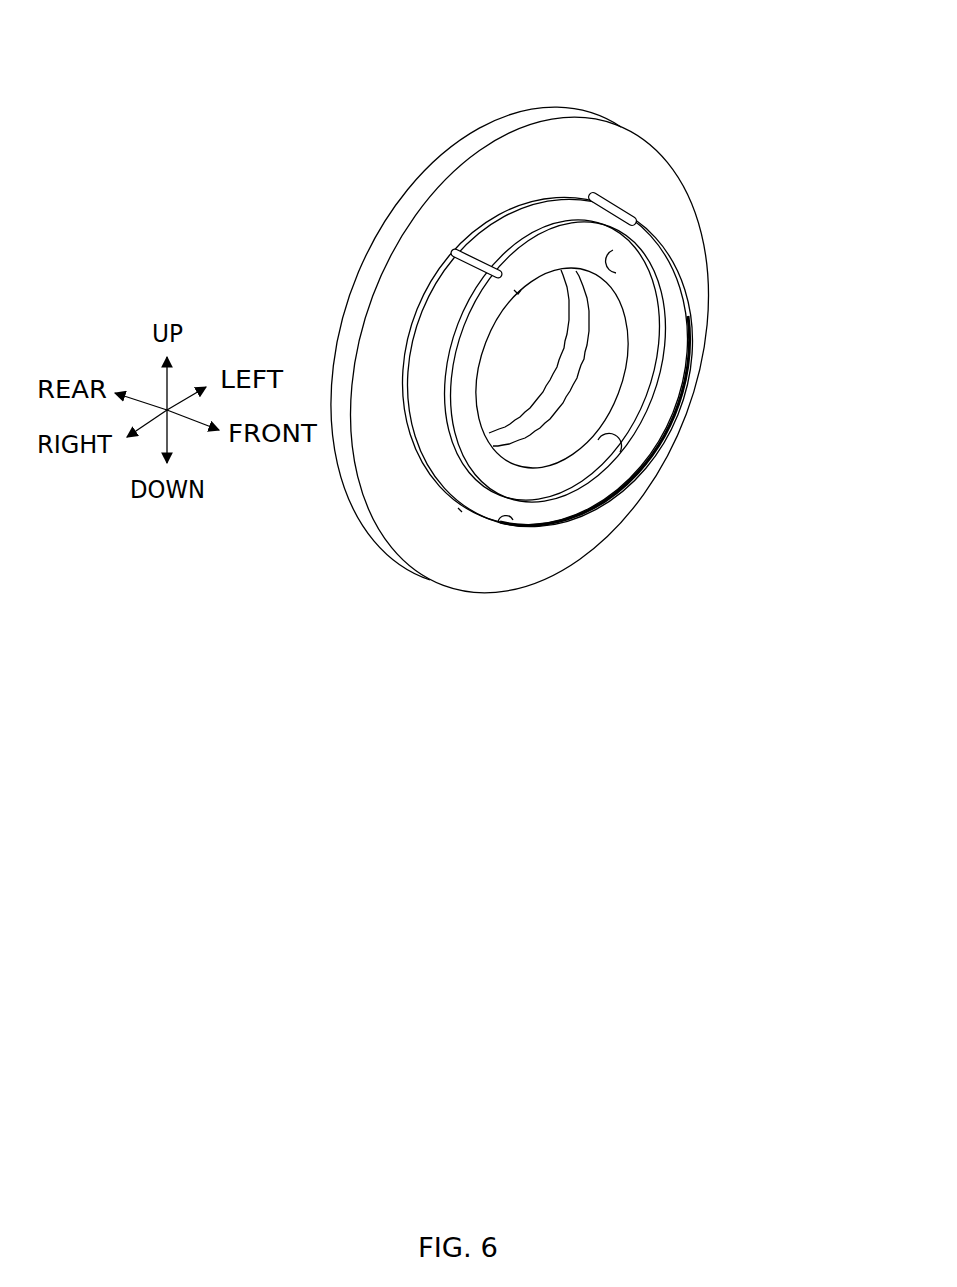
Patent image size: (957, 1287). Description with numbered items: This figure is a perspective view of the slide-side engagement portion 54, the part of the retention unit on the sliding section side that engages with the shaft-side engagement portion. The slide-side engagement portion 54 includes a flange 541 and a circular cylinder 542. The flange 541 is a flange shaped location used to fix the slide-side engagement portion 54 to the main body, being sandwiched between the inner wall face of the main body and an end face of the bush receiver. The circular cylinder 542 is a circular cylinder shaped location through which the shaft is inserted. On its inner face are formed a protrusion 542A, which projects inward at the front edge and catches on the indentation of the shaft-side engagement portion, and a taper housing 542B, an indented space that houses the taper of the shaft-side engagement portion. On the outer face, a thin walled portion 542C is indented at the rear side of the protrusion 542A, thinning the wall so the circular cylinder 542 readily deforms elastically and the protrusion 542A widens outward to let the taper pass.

The slide-side engagement portion 54 is at (325, 72).
The flange 541 is at (437, 170).
The circular cylinder 542 is at (668, 297).
The protrusion 542A is at (613, 270).
The taper housing 542B is at (560, 446).
The thin walled portion 542C is at (546, 214).